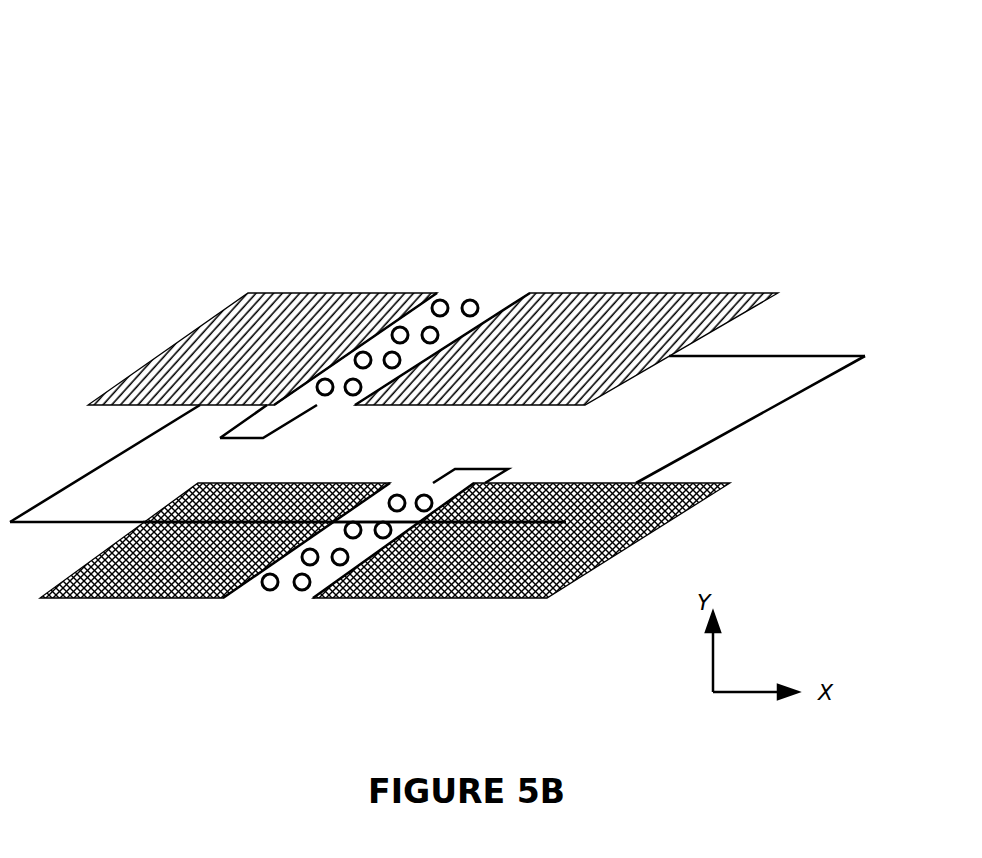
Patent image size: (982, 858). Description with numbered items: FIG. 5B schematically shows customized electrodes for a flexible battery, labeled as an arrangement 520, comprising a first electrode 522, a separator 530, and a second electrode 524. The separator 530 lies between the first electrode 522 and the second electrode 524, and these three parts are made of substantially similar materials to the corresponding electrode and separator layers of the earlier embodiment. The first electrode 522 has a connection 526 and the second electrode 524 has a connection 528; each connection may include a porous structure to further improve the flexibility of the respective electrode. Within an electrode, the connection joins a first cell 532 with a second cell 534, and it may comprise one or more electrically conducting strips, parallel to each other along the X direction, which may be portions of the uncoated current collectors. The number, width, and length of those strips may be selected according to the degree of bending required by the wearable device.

The layered electrode assembly 520 is at (464, 43).
The first electrode 522 is at (433, 258).
The second electrode 524 is at (385, 598).
The connection 526 is at (474, 293).
The connection 528 is at (298, 590).
The separator 530 is at (743, 398).
The first cell 532 is at (370, 260).
The second cell 534 is at (649, 273).